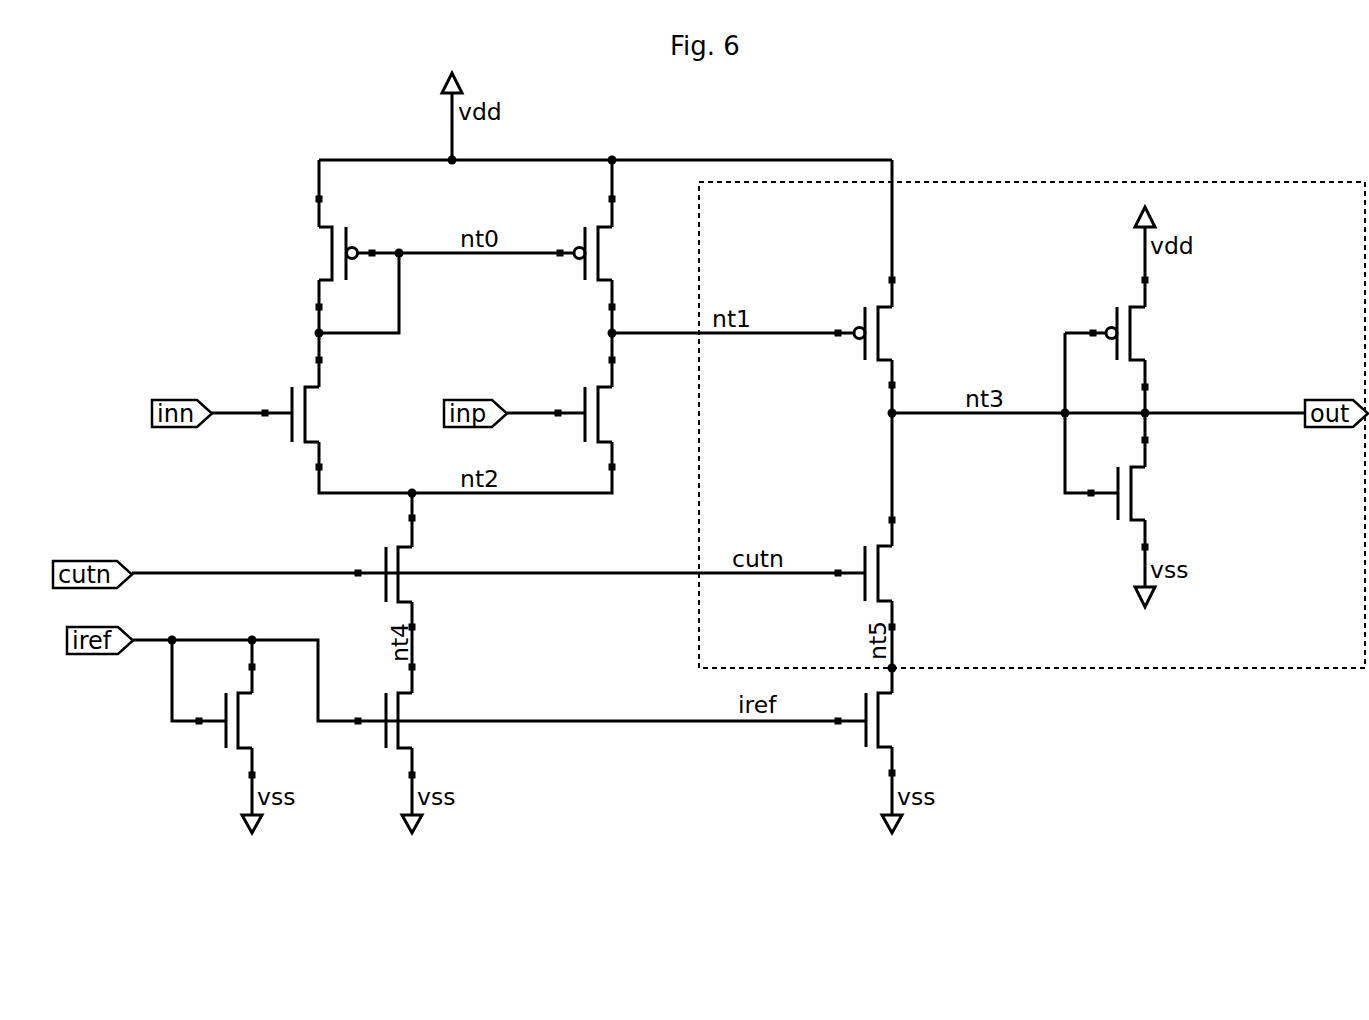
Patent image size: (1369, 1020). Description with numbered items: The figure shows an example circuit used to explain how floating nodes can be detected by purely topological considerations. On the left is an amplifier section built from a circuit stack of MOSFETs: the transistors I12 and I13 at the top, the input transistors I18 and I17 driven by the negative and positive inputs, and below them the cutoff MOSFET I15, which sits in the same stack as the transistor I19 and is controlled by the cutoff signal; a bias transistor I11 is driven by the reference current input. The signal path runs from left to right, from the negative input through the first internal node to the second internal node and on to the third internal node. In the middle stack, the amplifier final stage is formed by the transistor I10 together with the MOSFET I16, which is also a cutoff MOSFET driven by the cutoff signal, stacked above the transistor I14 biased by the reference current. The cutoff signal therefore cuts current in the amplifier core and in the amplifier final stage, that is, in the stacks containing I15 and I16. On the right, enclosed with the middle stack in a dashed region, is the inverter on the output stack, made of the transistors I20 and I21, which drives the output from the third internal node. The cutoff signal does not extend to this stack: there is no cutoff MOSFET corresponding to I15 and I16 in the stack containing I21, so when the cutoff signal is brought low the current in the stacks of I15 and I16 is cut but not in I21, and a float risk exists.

The PMOS transistor I10 is at (905, 335).
The NMOS transistor I11 is at (271, 721).
The PMOS transistor I12 is at (306, 254).
The PMOS transistor I13 is at (625, 254).
The NMOS transistor I14 is at (911, 721).
The cutoff MOSFET I15 is at (431, 575).
The amplifier final stage MOSFET I16 is at (911, 574).
The NMOS transistor I17 is at (631, 414).
The NMOS transistor I18 is at (338, 414).
The NMOS transistor I19 is at (431, 721).
The PMOS transistor I20 is at (1158, 335).
The output inverter MOSFET I21 is at (1164, 495).